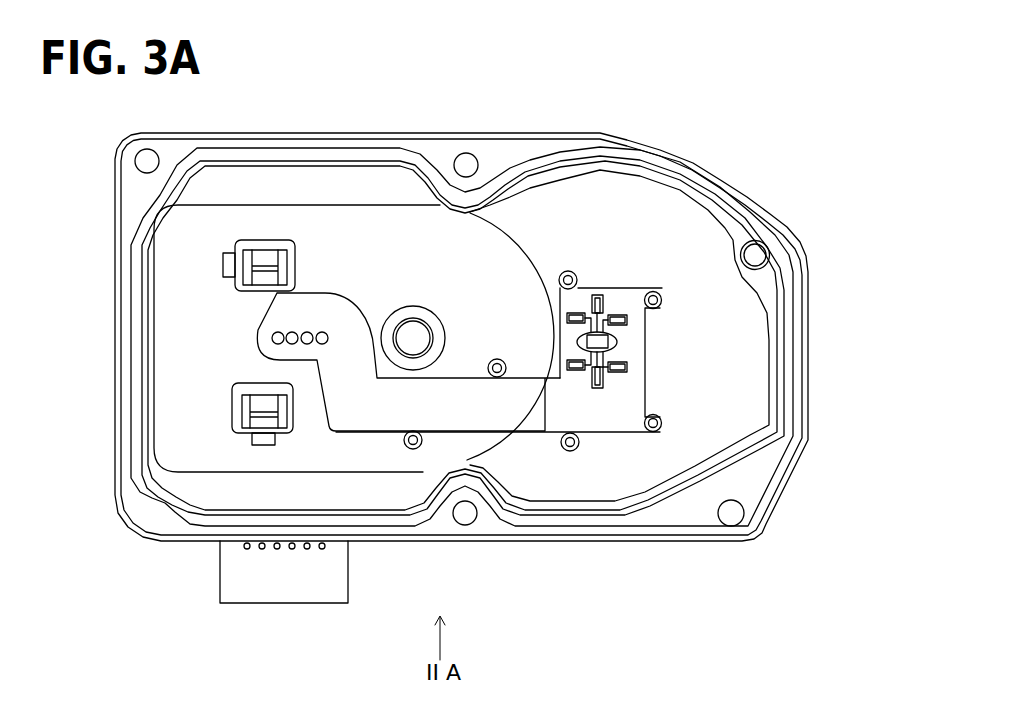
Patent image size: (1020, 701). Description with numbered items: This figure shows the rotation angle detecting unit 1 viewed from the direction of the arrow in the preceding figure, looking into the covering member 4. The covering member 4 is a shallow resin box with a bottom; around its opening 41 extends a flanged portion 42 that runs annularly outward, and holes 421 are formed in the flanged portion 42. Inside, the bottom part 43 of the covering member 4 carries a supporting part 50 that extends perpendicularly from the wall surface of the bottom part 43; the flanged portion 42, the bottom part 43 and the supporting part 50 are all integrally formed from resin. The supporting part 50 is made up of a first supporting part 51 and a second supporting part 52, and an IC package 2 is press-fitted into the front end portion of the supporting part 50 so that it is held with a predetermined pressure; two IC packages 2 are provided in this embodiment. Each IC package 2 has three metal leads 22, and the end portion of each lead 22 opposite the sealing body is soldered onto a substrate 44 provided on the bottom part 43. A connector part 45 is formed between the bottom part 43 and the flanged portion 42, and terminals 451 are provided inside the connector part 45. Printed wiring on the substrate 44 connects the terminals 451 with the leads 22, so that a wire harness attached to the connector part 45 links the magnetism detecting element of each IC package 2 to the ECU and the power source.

The rotation angle detecting unit 1 is at (375, 118).
The IC package 2 is at (617, 338).
The covering member 4 is at (116, 387).
The leads 22 is at (574, 312).
The opening 41 is at (152, 333).
The flanged portion 42 is at (117, 185).
The bottom part 43 is at (596, 392).
The substrate 44 is at (624, 420).
The connector part 45 is at (245, 600).
The supporting part 50 is at (558, 332).
The first supporting part 51 is at (577, 340).
The second supporting part 52 is at (622, 316).
The holes 421 is at (152, 158).
The terminals 451 is at (292, 549).